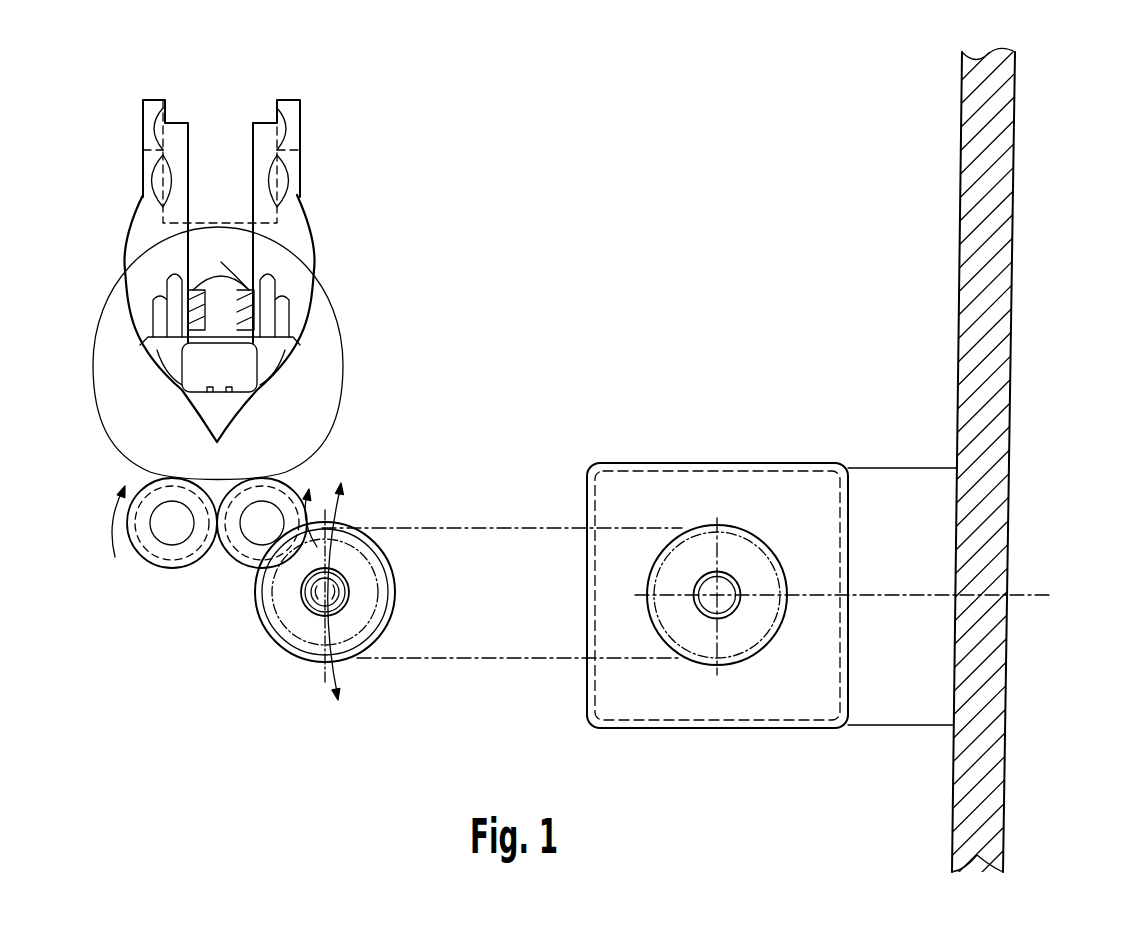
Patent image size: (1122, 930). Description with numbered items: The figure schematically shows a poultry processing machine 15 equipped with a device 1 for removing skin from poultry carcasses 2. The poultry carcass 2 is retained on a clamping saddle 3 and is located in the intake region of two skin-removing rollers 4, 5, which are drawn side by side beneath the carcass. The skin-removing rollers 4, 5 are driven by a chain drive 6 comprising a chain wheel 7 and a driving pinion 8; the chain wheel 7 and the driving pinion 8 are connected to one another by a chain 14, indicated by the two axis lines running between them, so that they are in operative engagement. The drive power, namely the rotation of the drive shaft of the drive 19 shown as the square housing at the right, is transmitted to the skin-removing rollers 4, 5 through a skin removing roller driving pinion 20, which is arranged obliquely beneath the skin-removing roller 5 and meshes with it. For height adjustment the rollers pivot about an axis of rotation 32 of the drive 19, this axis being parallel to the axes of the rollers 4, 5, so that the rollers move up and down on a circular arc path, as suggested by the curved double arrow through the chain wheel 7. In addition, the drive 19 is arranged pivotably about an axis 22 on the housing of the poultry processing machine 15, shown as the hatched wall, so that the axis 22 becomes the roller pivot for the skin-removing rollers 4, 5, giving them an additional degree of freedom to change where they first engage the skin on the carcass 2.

The device for removing skin 1 is at (137, 698).
The poultry carcass 2 is at (332, 376).
The clamping saddle 3 is at (243, 300).
The skin-removing roller 4 is at (148, 543).
The skin-removing roller 5 is at (290, 492).
The chain drive 6 is at (448, 710).
The chain wheel 7 is at (395, 592).
The driving pinion 8 is at (737, 543).
The chain 14 is at (475, 527).
The poultry processing machine 15 is at (970, 268).
The drive 19 is at (667, 465).
The skin removing roller driving pinion 20 is at (272, 623).
The axis of rotation 22 is at (1032, 593).
The axis of rotation of the drive 32 is at (717, 595).